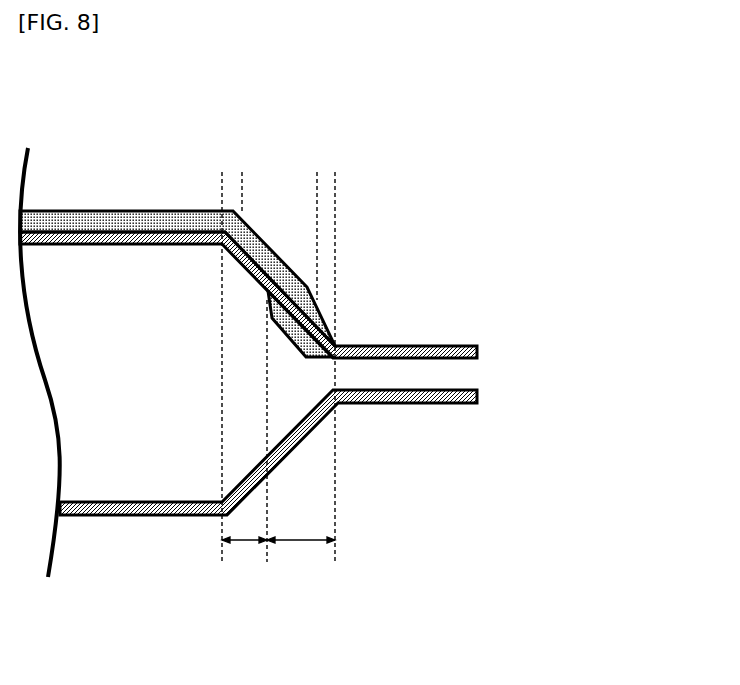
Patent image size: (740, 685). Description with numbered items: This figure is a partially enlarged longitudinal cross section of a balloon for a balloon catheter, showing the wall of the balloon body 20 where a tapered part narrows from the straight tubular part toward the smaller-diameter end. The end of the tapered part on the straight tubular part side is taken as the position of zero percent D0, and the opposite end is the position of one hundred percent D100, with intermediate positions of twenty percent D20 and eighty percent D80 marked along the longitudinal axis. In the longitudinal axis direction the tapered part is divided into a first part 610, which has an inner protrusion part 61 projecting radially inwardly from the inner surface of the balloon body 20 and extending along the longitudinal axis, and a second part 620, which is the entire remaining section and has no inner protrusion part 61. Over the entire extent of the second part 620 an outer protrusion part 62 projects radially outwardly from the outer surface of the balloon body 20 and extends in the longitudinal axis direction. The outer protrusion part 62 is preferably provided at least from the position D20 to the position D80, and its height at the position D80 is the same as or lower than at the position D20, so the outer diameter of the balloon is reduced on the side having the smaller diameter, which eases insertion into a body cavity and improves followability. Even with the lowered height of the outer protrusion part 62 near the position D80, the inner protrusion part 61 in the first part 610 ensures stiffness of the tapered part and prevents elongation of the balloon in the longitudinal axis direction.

The balloon body 20 is at (477, 346).
The inner protrusion part 61 is at (336, 347).
The outer protrusion part 62 is at (283, 255).
The first part 610 is at (300, 543).
The second part 620 is at (248, 543).
The position of 0% D0 is at (223, 171).
The position of 20% D20 is at (243, 172).
The position of 80% D80 is at (318, 171).
The position of 100% D100 is at (336, 170).